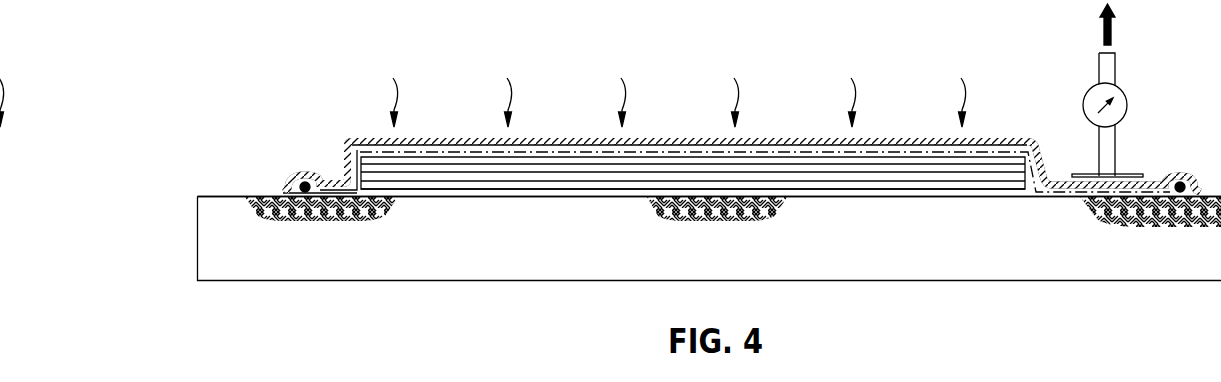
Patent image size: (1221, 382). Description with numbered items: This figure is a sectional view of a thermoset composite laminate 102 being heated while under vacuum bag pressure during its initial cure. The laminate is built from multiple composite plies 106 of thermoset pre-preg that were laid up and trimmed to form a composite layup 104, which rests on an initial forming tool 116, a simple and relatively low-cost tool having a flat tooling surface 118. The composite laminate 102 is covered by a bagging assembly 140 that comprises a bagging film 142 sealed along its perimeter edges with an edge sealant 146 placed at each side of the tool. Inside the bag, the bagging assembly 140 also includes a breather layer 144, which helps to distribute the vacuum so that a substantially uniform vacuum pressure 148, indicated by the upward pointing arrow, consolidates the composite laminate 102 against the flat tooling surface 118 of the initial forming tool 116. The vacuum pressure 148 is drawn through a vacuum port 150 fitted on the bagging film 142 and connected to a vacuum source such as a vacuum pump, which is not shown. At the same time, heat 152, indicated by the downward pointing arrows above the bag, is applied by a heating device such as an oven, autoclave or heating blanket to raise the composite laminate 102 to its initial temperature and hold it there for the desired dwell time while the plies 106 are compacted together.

The composite laminate 102 is at (442, 182).
The composite layup 104 is at (900, 186).
The composite plies 106 is at (592, 172).
The initial forming tool 116 is at (209, 185).
The flat tooling surface 118 is at (232, 195).
The bagging assembly 140 is at (340, 126).
The bagging film 142 is at (562, 138).
The breather layer 144 is at (688, 151).
The edge sealant 146 is at (300, 176).
The vacuum pressure 148 is at (1118, 27).
The vacuum port 150 is at (1102, 27).
The heat 152 is at (506, 95).